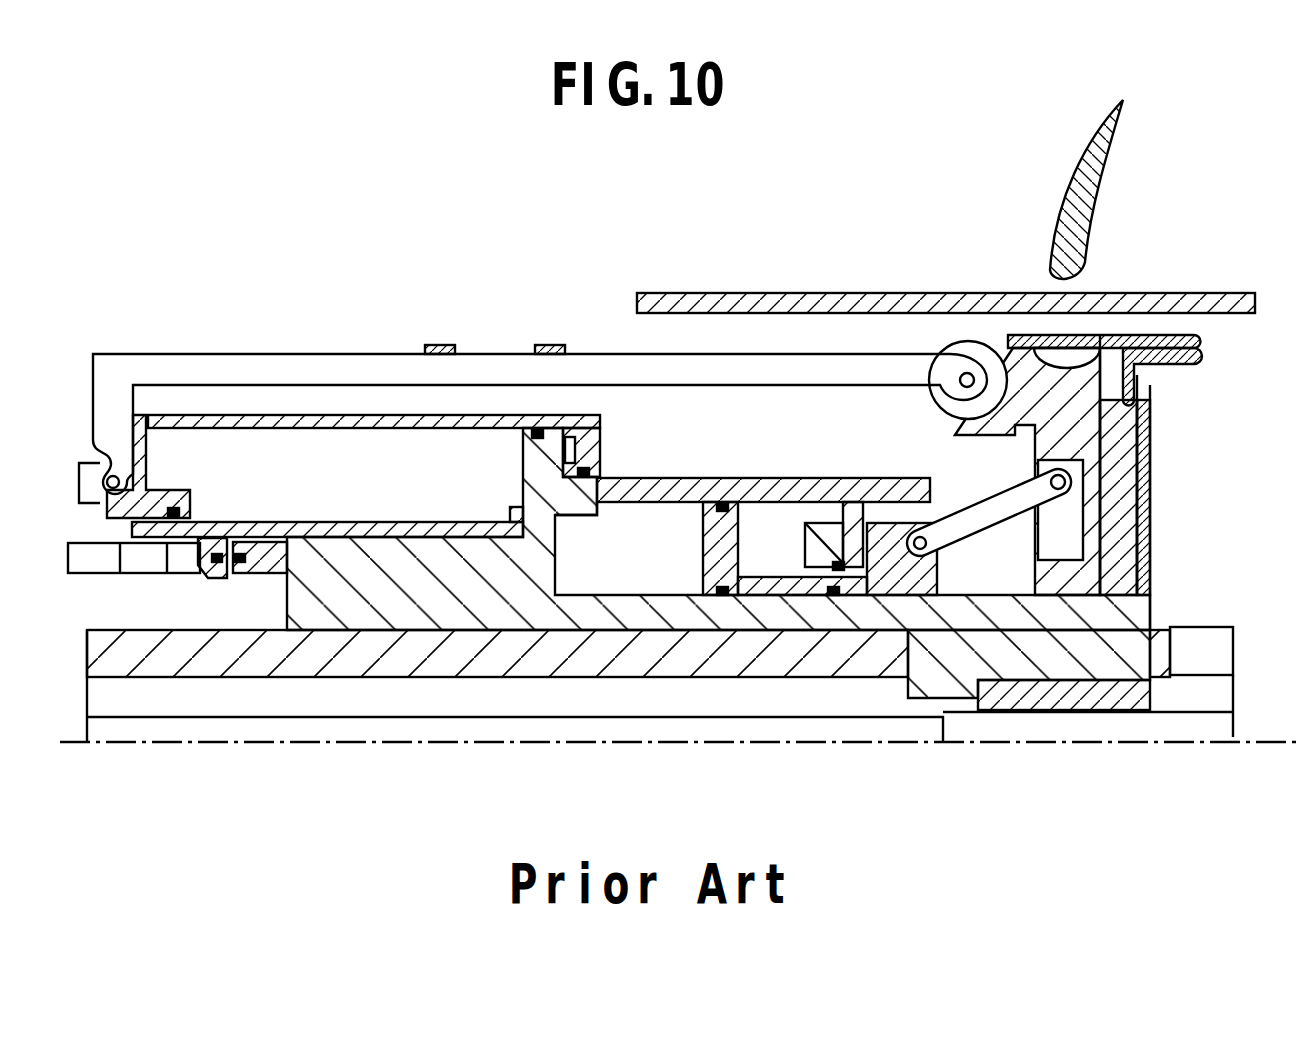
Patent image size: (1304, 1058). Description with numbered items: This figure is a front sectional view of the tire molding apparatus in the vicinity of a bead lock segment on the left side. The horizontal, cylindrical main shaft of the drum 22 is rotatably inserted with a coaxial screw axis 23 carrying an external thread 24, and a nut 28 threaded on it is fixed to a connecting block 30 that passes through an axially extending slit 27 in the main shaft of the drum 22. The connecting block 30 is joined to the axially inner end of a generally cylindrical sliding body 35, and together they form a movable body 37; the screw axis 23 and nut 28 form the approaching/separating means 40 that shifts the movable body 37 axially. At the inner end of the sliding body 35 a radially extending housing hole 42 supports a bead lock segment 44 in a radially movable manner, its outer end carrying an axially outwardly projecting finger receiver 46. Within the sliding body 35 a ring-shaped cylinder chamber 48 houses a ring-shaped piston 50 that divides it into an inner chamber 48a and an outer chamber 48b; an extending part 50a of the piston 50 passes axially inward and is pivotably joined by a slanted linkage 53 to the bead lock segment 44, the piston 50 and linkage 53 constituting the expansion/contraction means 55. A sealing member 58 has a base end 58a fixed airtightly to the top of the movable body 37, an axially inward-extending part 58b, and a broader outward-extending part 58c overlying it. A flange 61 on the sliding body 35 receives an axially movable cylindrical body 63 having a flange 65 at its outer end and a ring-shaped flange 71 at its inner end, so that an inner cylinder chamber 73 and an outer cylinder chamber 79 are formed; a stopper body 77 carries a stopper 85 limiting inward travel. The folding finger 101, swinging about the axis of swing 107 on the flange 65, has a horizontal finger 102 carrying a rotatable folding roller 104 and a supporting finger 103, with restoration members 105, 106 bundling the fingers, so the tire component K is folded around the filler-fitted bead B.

The main shaft of the drum 22 is at (87, 668).
The screw axis 23 is at (430, 727).
The external thread 24 is at (1015, 727).
The slit 27 is at (1208, 650).
The nut 28 is at (1100, 710).
The connecting block 30 is at (926, 682).
The sliding body 35 is at (527, 607).
The movable body 37 is at (832, 636).
The approaching/separating means 40 is at (1188, 748).
The housing hole 42 is at (1101, 505).
The bead lock segment 44 is at (1101, 462).
The finger receiver 46 is at (955, 436).
The cylinder chamber 48 is at (662, 535).
The inner chamber 48a is at (777, 533).
The outer chamber 48b is at (625, 520).
The piston 50 is at (742, 525).
The extending part 50a is at (624, 548).
The linkage 53 is at (980, 510).
The expansion/contraction means 55 is at (1163, 530).
The sealing member 58 is at (1212, 355).
The base end 58a is at (1136, 402).
The inward-extending part 58b is at (1192, 368).
The outward-extending part 58c is at (1170, 335).
The flange 61 is at (530, 479).
The cylindrical body 63 is at (382, 413).
The flange 65 is at (150, 462).
The flange 71 is at (598, 425).
The inner cylinder chamber 73 is at (540, 460).
The stopper body 77 is at (305, 520).
The outer cylinder chamber 79 is at (320, 475).
The stopper 85 is at (511, 512).
The folding finger 101 is at (472, 335).
The horizontal finger 102 is at (302, 370).
The supporting finger 103 is at (93, 410).
The folding roller 104 is at (935, 347).
The restoration member 105 is at (548, 345).
The restoration member 106 is at (440, 345).
The axis of swing 107 is at (80, 481).
The tire component K is at (770, 293).
The filler-fitted bead B is at (1058, 200).